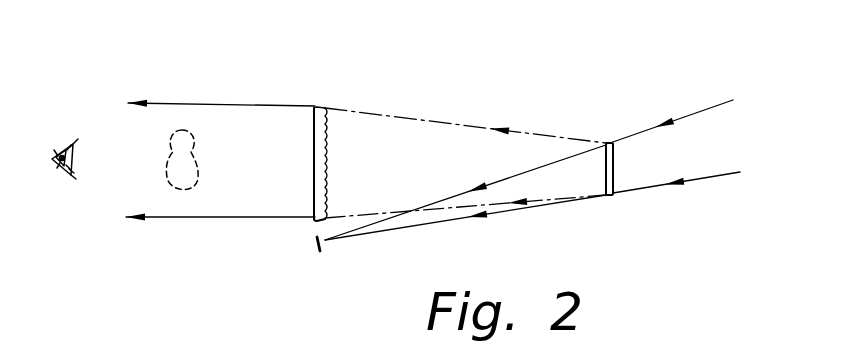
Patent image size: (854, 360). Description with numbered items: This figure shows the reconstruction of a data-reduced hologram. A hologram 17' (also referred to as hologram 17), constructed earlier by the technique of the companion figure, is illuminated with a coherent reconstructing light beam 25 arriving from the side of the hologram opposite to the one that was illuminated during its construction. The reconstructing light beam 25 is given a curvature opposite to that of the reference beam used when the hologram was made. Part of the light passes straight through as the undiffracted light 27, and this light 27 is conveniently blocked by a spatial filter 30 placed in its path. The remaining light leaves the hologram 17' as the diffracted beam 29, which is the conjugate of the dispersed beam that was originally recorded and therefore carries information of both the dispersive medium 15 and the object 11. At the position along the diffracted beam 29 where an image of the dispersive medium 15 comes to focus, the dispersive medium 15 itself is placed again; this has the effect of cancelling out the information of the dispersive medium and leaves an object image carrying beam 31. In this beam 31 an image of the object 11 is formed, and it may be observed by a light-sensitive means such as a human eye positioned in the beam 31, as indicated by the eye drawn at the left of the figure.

The object 11 is at (197, 177).
The dispersive medium 15 is at (323, 105).
The hologram 17' is at (636, 131).
The deflecting mirror element 17 is at (636, 131).
The coherent reconstructing light beam 25 is at (698, 115).
The undiffracted light 27 is at (423, 222).
The diffracted beam 29 is at (433, 125).
The spatial filter 30 is at (308, 247).
The object image carrying beam 31 is at (210, 108).